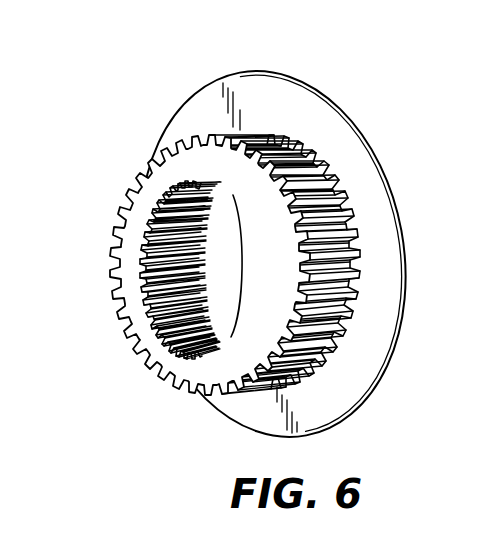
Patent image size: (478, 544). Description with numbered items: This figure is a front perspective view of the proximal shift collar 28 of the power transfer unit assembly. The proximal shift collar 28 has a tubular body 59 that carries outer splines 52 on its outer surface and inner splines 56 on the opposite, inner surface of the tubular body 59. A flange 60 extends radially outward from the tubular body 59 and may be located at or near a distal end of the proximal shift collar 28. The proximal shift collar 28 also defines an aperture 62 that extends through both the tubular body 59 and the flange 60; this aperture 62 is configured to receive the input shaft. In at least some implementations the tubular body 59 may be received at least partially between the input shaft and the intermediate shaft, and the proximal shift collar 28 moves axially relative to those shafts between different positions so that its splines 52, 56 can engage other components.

The proximal shift collar 28 is at (231, 271).
The outer splines 52 is at (333, 233).
The inner splines 56 is at (167, 243).
The tubular body 59 is at (233, 315).
The flange 60 is at (243, 92).
The aperture 62 is at (238, 264).